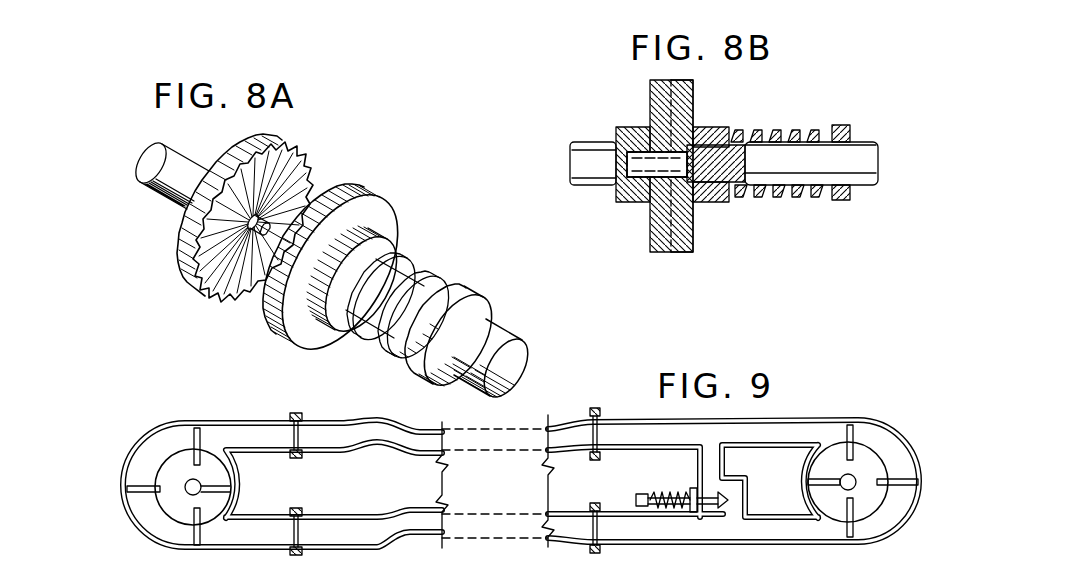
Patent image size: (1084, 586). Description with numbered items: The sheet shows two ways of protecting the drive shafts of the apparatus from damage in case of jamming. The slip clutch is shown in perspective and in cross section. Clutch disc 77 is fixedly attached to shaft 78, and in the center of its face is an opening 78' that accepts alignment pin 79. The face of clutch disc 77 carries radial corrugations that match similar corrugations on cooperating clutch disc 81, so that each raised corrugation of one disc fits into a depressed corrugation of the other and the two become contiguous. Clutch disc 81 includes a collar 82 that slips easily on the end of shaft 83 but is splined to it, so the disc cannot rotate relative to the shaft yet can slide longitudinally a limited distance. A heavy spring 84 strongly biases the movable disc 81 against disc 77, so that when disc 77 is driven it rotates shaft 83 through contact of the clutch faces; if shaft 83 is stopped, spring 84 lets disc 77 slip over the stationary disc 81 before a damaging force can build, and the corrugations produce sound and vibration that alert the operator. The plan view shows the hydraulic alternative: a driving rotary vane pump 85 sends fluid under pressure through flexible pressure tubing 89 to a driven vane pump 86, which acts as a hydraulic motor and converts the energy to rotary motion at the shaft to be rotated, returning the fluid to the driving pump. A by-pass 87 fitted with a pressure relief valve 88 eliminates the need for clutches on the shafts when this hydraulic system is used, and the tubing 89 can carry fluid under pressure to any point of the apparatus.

In FIG. 8A, the clutch disc 77 is at (282, 150).
In FIG. 8B, the clutch disc 77 is at (652, 94).
In FIG. 8A, the shaft 78 is at (158, 167).
In FIG. 8B, the shaft 78 is at (578, 149).
In FIG. 8A, the opening 78' is at (295, 193).
In FIG. 8B, the opening 78' is at (647, 138).
In FIG. 8A, the alignment pin 79 is at (252, 230).
In FIG. 8A, the cooperating clutch disc 81 is at (382, 207).
In FIG. 8B, the cooperating clutch disc 81 is at (690, 94).
In FIG. 8A, the collar 82 is at (380, 245).
In FIG. 8B, the collar 82 is at (705, 198).
In FIG. 8A, the shaft 83 is at (490, 338).
In FIG. 8B, the shaft 83 is at (707, 178).
In FIG. 8A, the spring 84 is at (427, 285).
In FIG. 8B, the spring 84 is at (770, 132).
In FIG. 9, the rotary vane pump 85 is at (175, 460).
In FIG. 9, the vane pump 86 is at (836, 455).
In FIG. 9, the by-pass 87 is at (707, 455).
In FIG. 9, the pressure relief valve 88 is at (727, 500).
In FIG. 9, the flexible pressure tubing 89 is at (358, 428).